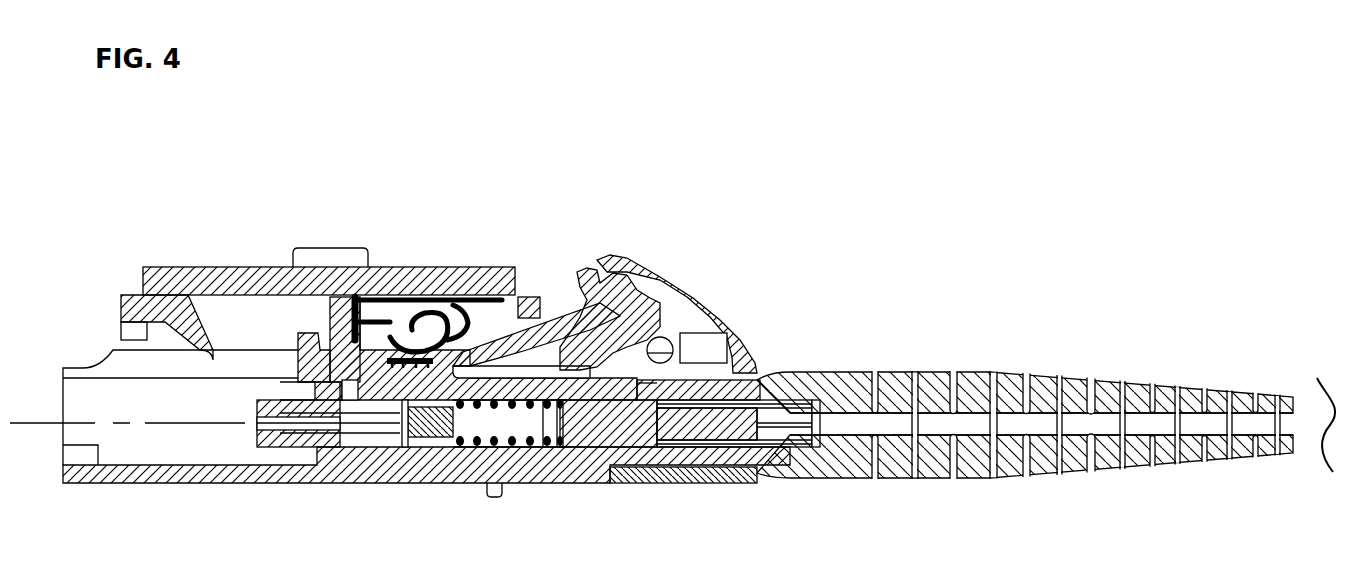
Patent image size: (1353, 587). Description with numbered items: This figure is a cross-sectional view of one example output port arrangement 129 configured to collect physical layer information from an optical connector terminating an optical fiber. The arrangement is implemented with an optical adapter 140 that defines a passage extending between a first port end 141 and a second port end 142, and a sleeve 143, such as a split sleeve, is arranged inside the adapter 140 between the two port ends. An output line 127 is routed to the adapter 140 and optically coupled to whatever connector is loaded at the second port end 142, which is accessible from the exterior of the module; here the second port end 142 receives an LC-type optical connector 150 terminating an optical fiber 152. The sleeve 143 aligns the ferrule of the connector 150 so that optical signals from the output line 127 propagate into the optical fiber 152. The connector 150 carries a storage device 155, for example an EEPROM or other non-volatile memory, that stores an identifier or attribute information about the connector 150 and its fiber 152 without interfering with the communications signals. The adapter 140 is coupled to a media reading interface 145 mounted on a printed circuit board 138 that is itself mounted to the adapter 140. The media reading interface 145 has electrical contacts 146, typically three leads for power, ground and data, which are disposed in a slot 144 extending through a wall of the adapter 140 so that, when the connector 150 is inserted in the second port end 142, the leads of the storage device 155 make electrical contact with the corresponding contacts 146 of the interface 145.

The output line 127 is at (118, 405).
The output port arrangement 129 is at (488, 245).
The printed circuit board 138 is at (260, 268).
The optical adapter 140 is at (285, 485).
The first port end 141 is at (65, 386).
The second port end 142 is at (607, 470).
The sleeve 143 is at (397, 438).
The slot 144 is at (200, 268).
The media reading interface 145 is at (458, 280).
The electrical contacts 146 is at (257, 399).
The optical connector 150 is at (777, 352).
The optical fiber 152 is at (1313, 410).
The storage device 155 is at (365, 300).